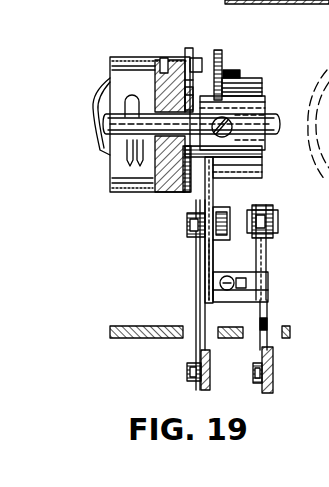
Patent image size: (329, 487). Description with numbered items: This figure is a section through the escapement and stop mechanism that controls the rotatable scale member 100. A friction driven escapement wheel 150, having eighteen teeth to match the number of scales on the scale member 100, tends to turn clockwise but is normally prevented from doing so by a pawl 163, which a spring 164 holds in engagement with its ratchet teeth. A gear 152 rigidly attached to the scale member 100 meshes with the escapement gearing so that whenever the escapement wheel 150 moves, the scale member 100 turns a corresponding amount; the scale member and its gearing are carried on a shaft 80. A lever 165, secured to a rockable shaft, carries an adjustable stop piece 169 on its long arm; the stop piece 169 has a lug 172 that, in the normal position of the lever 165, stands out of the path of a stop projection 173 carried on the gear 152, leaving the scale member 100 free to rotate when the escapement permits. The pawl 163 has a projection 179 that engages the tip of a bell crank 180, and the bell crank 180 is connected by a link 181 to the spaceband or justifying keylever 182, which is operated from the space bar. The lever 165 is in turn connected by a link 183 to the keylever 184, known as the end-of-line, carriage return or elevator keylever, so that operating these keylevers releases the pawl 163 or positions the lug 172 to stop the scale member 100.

The scale member 100 is at (165, 50).
The shaft 80 is at (310, 93).
The gear 152 is at (195, 48).
The escapement wheel 150 is at (224, 68).
The lug 172 is at (214, 188).
The adjustable stop piece 169 is at (232, 198).
The stop projection 173 is at (195, 208).
The lever 165 is at (187, 232).
The pawl 163 is at (212, 255).
The spring 164 is at (214, 275).
The bell crank 180 is at (262, 243).
The projection 179 is at (240, 294).
The link 183 is at (200, 300).
The link 181 is at (268, 320).
The keylever 182 is at (275, 362).
The keylever 184 is at (210, 362).